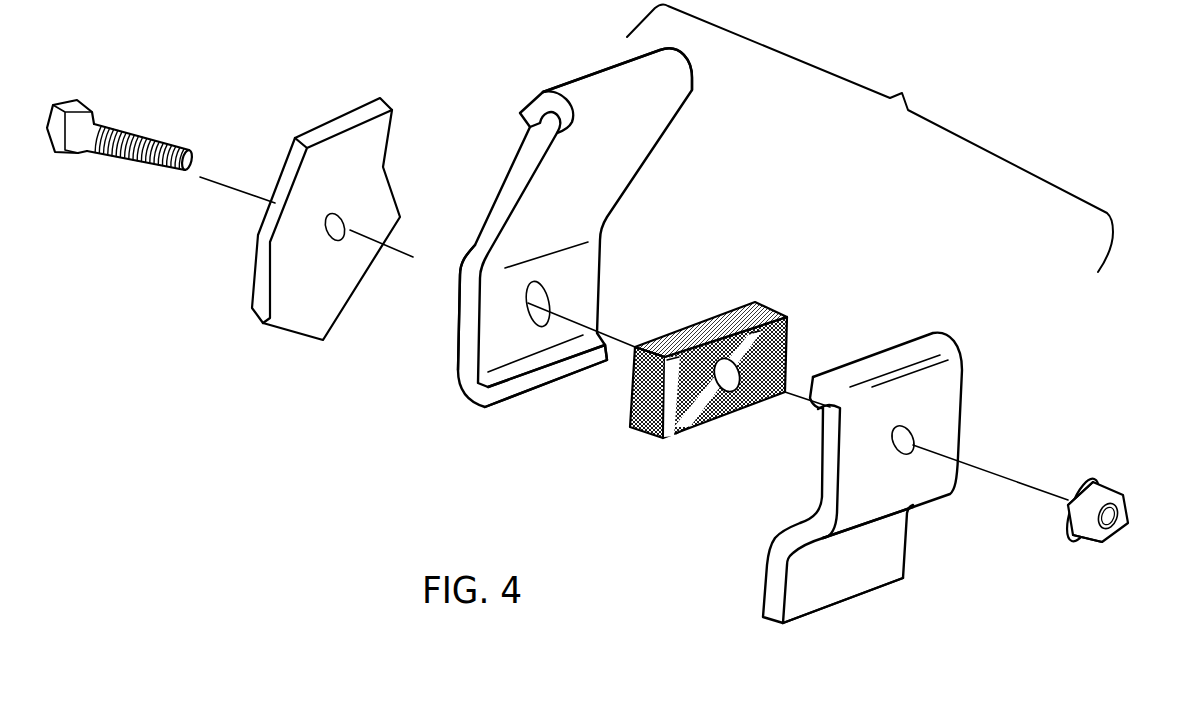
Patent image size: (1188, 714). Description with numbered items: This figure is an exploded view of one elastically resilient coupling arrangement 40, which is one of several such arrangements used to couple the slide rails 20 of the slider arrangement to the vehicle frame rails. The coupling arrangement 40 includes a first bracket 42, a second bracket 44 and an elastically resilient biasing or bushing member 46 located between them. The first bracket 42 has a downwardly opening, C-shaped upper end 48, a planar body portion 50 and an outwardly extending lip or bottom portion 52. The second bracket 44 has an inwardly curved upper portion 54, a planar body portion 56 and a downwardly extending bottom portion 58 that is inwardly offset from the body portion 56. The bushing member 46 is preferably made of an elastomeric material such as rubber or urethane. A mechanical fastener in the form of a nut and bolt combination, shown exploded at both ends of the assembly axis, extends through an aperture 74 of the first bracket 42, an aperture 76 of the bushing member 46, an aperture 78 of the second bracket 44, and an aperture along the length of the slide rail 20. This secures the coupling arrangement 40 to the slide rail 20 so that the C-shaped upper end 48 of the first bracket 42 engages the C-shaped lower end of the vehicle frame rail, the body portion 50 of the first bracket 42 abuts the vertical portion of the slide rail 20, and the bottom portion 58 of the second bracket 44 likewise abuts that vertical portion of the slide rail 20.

The slide rail 20 is at (320, 289).
The coupling arrangement 40 is at (870, 138).
The first bracket 42 is at (565, 231).
The second bracket 44 is at (907, 464).
The biasing or bushing member 46 is at (741, 353).
The C-shaped upper end 48 is at (588, 93).
The planar body portion 50 is at (460, 340).
The lip or bottom portion 52 is at (530, 380).
The inwardly curved upper portion 54 is at (882, 365).
The planar body portion 56 is at (927, 470).
The bottom portion 58 is at (840, 575).
The aperture of the first bracket 74 is at (550, 295).
The aperture of the pad 76 is at (790, 338).
The aperture of the second bracket 78 is at (917, 432).